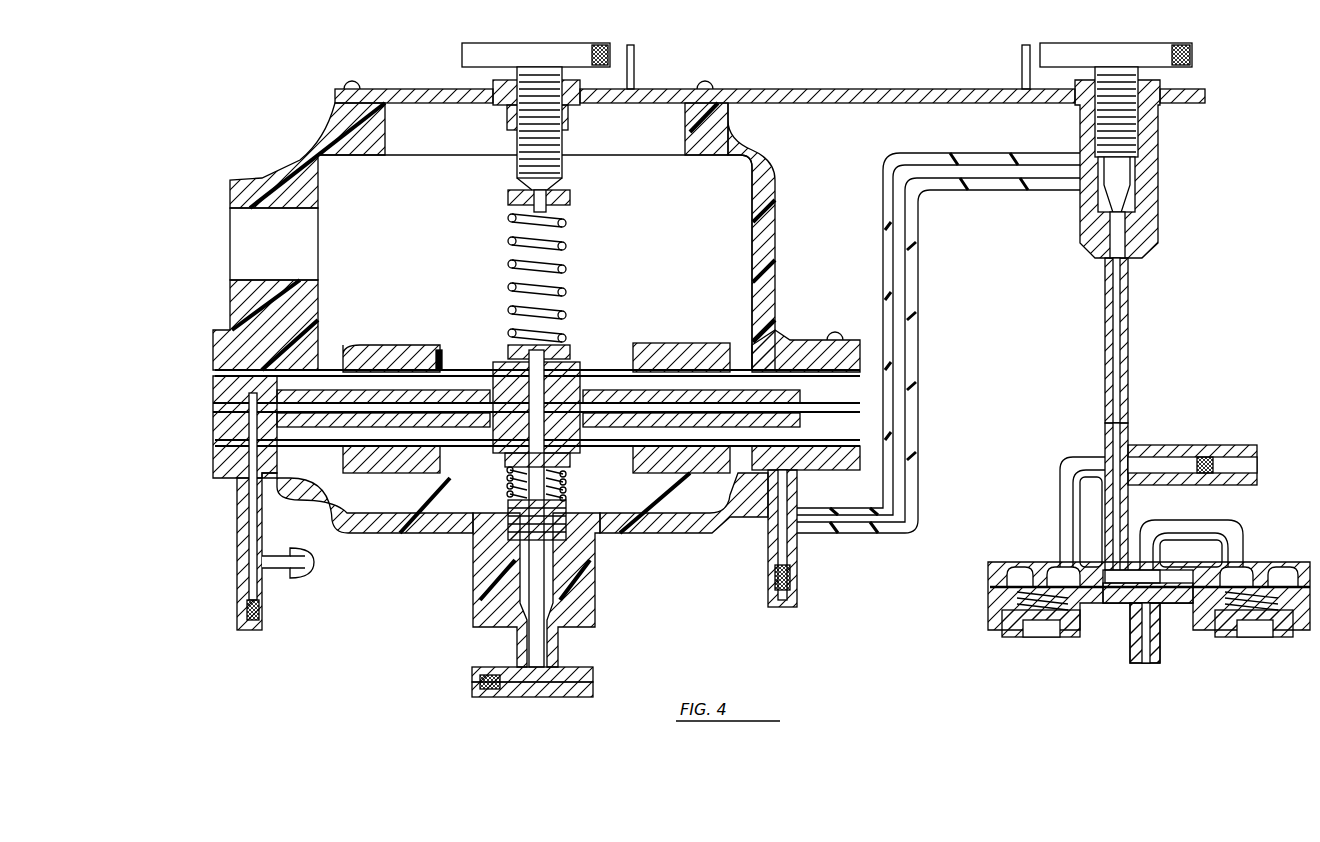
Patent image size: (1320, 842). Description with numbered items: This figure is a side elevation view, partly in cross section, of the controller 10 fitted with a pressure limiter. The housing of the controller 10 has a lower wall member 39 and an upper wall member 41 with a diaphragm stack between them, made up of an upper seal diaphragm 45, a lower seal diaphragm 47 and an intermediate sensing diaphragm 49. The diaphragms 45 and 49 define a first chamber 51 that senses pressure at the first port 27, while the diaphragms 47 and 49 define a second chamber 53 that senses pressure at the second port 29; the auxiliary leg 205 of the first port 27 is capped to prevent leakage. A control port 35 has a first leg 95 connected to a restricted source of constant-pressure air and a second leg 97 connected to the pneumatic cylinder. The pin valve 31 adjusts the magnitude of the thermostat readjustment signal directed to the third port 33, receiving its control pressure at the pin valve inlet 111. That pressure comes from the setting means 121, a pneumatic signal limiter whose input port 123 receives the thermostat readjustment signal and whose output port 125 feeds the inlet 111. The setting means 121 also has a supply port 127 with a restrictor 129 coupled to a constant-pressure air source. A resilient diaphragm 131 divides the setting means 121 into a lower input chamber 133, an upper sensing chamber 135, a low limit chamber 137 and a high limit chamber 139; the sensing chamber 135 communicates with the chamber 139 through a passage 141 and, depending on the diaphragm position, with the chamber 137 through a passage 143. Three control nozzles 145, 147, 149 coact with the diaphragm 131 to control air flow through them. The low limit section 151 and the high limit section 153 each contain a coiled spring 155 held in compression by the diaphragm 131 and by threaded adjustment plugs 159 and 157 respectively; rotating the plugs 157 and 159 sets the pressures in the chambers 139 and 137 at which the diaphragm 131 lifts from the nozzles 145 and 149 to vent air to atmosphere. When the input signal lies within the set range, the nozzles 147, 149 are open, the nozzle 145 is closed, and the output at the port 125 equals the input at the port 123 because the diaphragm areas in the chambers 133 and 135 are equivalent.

The controller 10 is at (290, 132).
The first port 27 is at (265, 632).
The second port 29 is at (782, 607).
The pin valve 31 is at (1078, 222).
The third port 33 is at (830, 540).
The control port 35 is at (580, 697).
The lower wall member 39 is at (420, 538).
The upper wall member 41 is at (778, 192).
The upper seal diaphragm 45 is at (440, 368).
The lower seal diaphragm 47 is at (450, 455).
The intermediate sensing diaphragm 49 is at (586, 394).
The first chamber 51 is at (480, 395).
The second chamber 53 is at (480, 434).
The first leg 95 is at (470, 682).
The second leg 97 is at (597, 670).
The pin valve inlet 111 is at (1103, 278).
The setting means 121 is at (1057, 466).
The input port 123 is at (1130, 655).
The output port 125 is at (1128, 420).
The supply port 127 is at (1250, 445).
The restrictor 129 is at (1205, 457).
The resilient diaphragm 131 is at (990, 588).
The lower input chamber 133 is at (1118, 612).
The upper sensing chamber 135 is at (1185, 568).
The low limit chamber 137 is at (1240, 575).
The high limit chamber 139 is at (1018, 568).
The passage 141 is at (1068, 460).
The passage 143 is at (1200, 520).
The control nozzle 145 is at (1060, 568).
The control nozzle 147 is at (1142, 530).
The control nozzle 149 is at (1268, 578).
The low limit section 151 is at (1298, 637).
The high limit section 153 is at (1002, 630).
The coiled spring 155 is at (1002, 615).
The high limit plug 157 is at (1030, 637).
The low limit plug 159 is at (1245, 637).
The auxiliary leg 205 is at (300, 578).